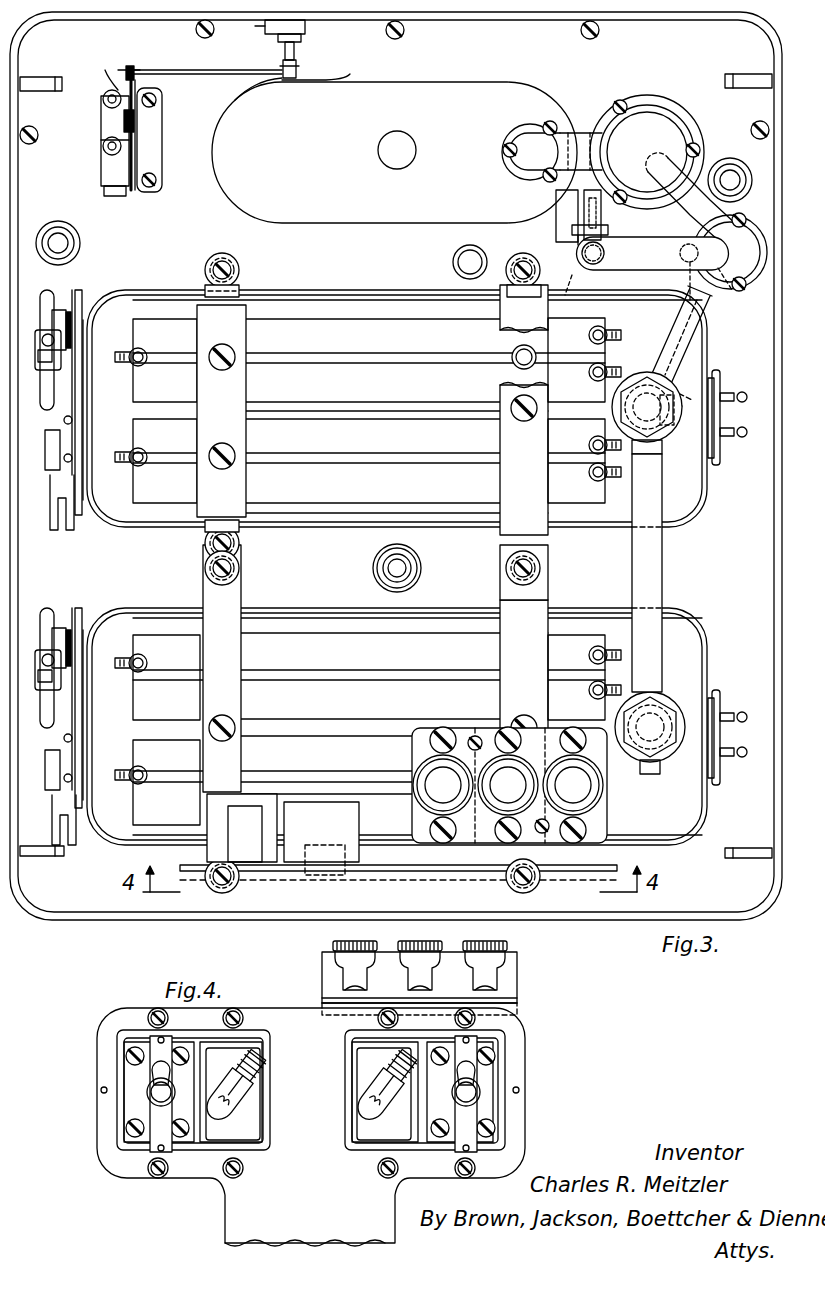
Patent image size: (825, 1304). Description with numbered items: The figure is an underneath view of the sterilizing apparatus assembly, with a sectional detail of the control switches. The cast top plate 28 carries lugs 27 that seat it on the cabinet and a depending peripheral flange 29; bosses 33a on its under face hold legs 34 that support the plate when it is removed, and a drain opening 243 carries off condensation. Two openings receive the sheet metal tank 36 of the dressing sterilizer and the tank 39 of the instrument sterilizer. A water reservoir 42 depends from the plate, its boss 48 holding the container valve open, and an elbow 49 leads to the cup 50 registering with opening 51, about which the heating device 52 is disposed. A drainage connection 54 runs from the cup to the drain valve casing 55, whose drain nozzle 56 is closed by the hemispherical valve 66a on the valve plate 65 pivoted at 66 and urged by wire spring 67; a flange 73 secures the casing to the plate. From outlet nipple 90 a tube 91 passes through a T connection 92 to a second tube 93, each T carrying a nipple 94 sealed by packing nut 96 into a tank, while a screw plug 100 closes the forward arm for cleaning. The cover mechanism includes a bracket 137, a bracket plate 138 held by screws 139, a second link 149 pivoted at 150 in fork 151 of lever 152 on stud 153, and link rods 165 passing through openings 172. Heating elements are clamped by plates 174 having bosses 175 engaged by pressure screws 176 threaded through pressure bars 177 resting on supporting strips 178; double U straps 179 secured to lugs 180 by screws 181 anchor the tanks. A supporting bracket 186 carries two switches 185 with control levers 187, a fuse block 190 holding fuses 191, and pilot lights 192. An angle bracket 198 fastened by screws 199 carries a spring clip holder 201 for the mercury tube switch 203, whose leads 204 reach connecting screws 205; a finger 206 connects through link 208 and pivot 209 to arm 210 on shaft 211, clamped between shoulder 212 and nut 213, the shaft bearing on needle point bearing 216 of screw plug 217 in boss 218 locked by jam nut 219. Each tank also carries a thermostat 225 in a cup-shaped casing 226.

In FIG. 3, the lugs 27 is at (36, 77).
In FIG. 3, the top plate 28 is at (611, 912).
In FIG. 3, the depending peripheral flange 29 is at (560, 913).
In FIG. 3, the depending bosses 33a is at (753, 161).
In FIG. 3, the legs 34 is at (414, 569).
In FIG. 3, the sheet metal tank 36 is at (573, 512).
In FIG. 3, the sheet metal tank 39 is at (618, 622).
In FIG. 3, the water reservoir 42 is at (385, 212).
In FIG. 3, the boss 48 is at (388, 138).
In FIG. 3, the elbow 49 is at (540, 145).
In FIG. 3, the cup 50 is at (648, 128).
In FIG. 3, the opening 51 is at (702, 153).
In FIG. 3, the heating device 52 is at (685, 118).
In FIG. 3, the drainage connection 54 is at (691, 196).
In FIG. 3, the drain valve casing 55 is at (742, 242).
In FIG. 3, the drain nozzle 56 is at (650, 262).
In FIG. 3, the valve plate 65 is at (585, 185).
In FIG. 3, the pivot 66 is at (572, 232).
In FIG. 3, the hemispherical valve 66a is at (582, 293).
In FIG. 3, the wire spring 67 is at (584, 210).
In FIG. 3, the flange 73 is at (752, 290).
In FIG. 3, the outlet nipple 90 is at (715, 290).
In FIG. 3, the tube 91 is at (680, 330).
In FIG. 3, the T connection 92 is at (648, 385).
In FIG. 3, the second tube 93 is at (662, 550).
In FIG. 3, the nipple 94 is at (660, 448).
In FIG. 3, the packing nut 96 is at (680, 420).
In FIG. 3, the screw plug 100 is at (648, 775).
In FIG. 3, the bracket 137 is at (80, 432).
In FIG. 3, the bracket plate 138 is at (80, 292).
In FIG. 3, the screws 139 is at (63, 422).
In FIG. 3, the second link 149 is at (60, 310).
In FIG. 3, the pivot 150 is at (74, 325).
In FIG. 3, the fork 151 is at (74, 300).
In FIG. 3, the lever 152 is at (52, 520).
In FIG. 3, the stud 153 is at (46, 458).
In FIG. 3, the link rods 165 is at (60, 355).
In FIG. 3, the openings 172 is at (50, 290).
In FIG. 3, the clamping plates 174 is at (140, 387).
In FIG. 3, the boss 175 is at (512, 353).
In FIG. 3, the pressure screw 176 is at (240, 352).
In FIG. 3, the pressure bars 177 is at (232, 385).
In FIG. 3, the supporting strips 178 is at (236, 295).
In FIG. 3, the tank securing strap 179 is at (241, 598).
In FIG. 3, the lugs 180 is at (210, 258).
In FIG. 3, the screws 181 is at (508, 400).
In FIG. 4, the switches 185 is at (128, 1112).
In FIG. 3, the supporting bracket 186 is at (332, 875).
In FIG. 4, the supporting bracket 186 is at (232, 1228).
In FIG. 4, the control lever 187 is at (150, 1070).
In FIG. 3, the fuse block 190 is at (418, 730).
In FIG. 4, the fuse block 190 is at (517, 1000).
In FIG. 3, the fuses 191 is at (425, 770).
In FIG. 4, the fuses 191 is at (475, 940).
In FIG. 4, the pilot light 192 is at (370, 1095).
In FIG. 3, the angle bracket 198 is at (162, 160).
In FIG. 3, the screws 199 is at (158, 102).
In FIG. 3, the switch holding member 201 is at (101, 118).
In FIG. 3, the mercury tube switch 203 is at (112, 196).
In FIG. 3, the flexible leads 204 is at (124, 128).
In FIG. 3, the connecting screws 205 is at (104, 103).
In FIG. 3, the finger 206 is at (136, 80).
In FIG. 3, the link 208 is at (130, 66).
In FIG. 3, the pivot 209 is at (140, 70).
In FIG. 3, the arm 210 is at (225, 70).
In FIG. 3, the shaft 211 is at (271, 90).
In FIG. 3, the shoulder 212 is at (337, 71).
In FIG. 3, the nut 213 is at (297, 66).
In FIG. 3, the needle point bearing 216 is at (285, 47).
In FIG. 3, the screw plug 217 is at (300, 38).
In FIG. 3, the boss 218 is at (305, 27).
In FIG. 3, the jam nut 219 is at (248, 25).
In FIG. 3, the thermostat 225 is at (718, 378).
In FIG. 3, the cup-shaped casing 226 is at (716, 440).
In FIG. 3, the drain opening 243 is at (455, 267).